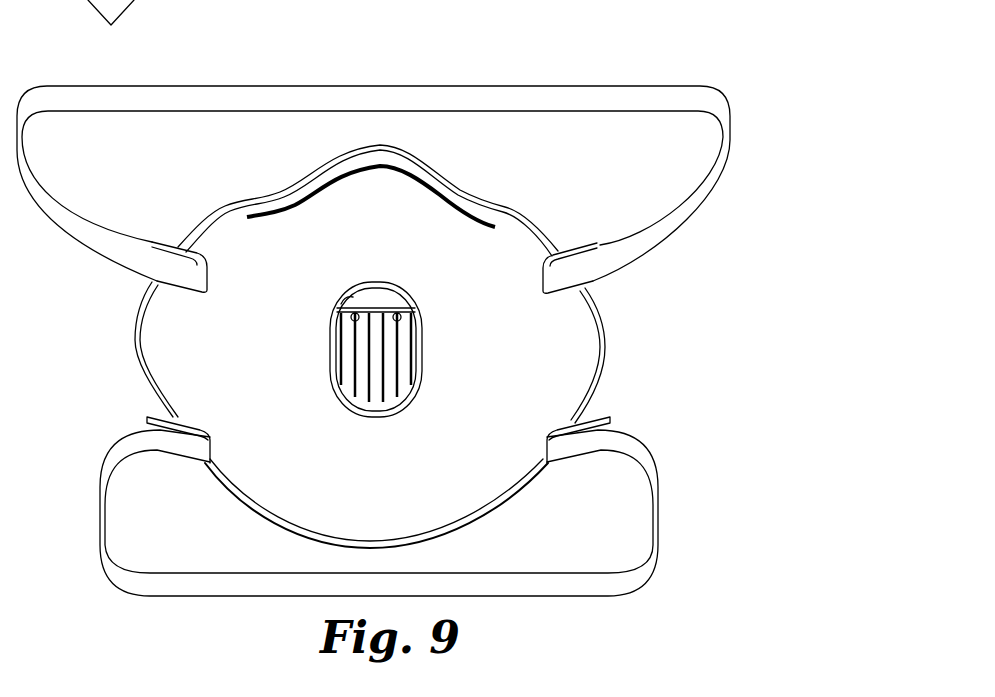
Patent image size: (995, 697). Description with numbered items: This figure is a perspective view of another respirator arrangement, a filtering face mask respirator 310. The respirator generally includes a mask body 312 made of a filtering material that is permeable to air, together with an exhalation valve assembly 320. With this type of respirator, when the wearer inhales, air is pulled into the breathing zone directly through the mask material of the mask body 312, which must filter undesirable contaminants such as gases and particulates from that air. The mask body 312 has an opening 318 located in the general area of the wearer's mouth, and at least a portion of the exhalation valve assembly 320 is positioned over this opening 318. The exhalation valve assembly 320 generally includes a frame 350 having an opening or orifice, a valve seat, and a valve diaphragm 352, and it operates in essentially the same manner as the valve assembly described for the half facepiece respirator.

The filtering face mask respirator 310 is at (603, 42).
The mask body 312 is at (588, 348).
The opening 318 is at (345, 303).
The exhalation valve assembly 320 is at (420, 348).
The frame 350 is at (381, 296).
The valve diaphragm 352 is at (367, 395).